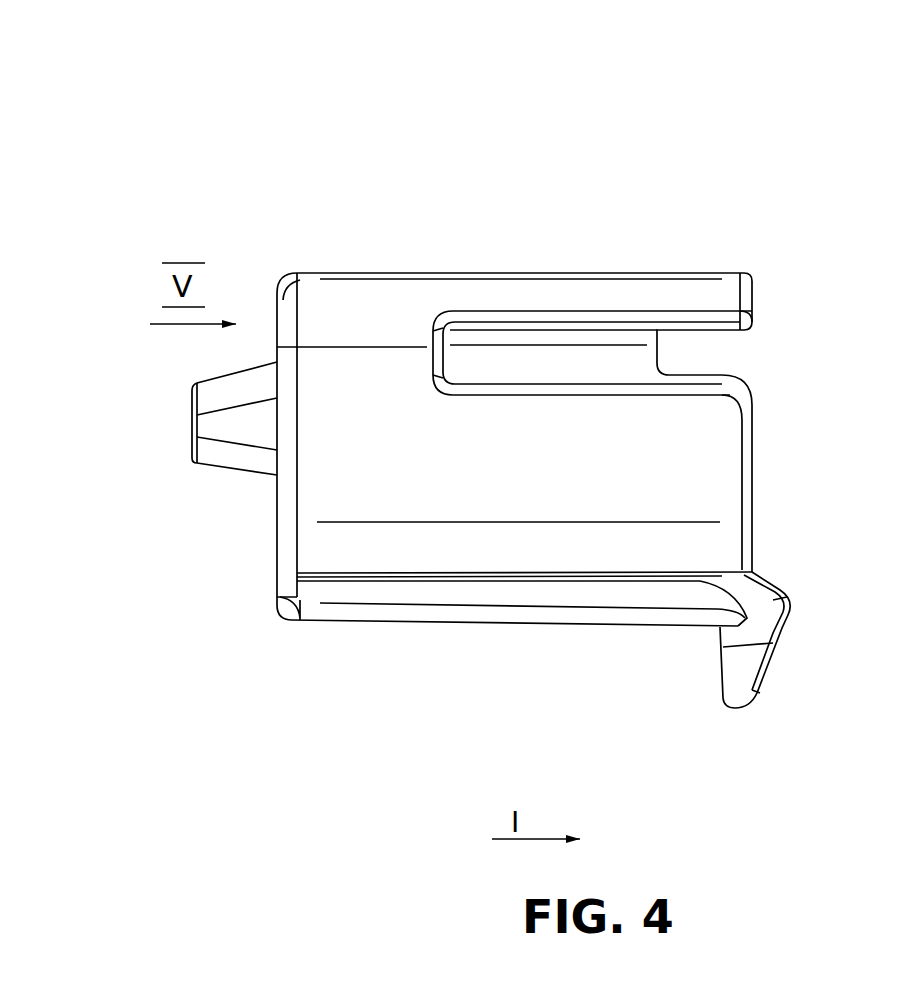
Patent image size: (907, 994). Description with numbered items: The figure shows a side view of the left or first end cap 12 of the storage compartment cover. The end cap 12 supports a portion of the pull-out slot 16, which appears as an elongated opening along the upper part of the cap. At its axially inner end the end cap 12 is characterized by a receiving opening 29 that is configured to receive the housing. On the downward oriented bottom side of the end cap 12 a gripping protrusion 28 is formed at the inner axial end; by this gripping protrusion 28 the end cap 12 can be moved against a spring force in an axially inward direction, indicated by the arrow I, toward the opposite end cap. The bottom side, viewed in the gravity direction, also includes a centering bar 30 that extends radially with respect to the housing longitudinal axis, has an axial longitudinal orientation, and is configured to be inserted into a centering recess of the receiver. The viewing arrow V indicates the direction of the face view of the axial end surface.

The end cap 12 is at (631, 170).
The pull-out slot 16 is at (613, 334).
The receiving opening 29 is at (750, 355).
The centering bar 30 is at (467, 641).
The gripping protrusion 28 is at (763, 720).